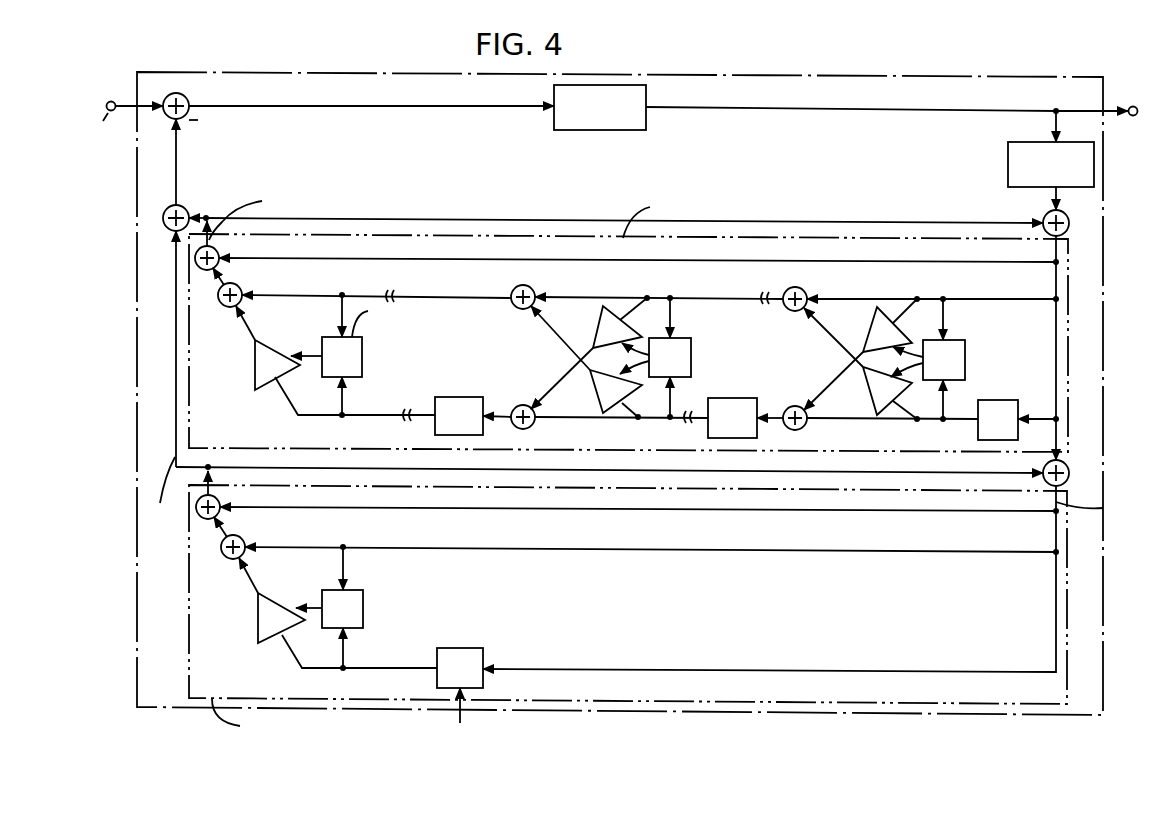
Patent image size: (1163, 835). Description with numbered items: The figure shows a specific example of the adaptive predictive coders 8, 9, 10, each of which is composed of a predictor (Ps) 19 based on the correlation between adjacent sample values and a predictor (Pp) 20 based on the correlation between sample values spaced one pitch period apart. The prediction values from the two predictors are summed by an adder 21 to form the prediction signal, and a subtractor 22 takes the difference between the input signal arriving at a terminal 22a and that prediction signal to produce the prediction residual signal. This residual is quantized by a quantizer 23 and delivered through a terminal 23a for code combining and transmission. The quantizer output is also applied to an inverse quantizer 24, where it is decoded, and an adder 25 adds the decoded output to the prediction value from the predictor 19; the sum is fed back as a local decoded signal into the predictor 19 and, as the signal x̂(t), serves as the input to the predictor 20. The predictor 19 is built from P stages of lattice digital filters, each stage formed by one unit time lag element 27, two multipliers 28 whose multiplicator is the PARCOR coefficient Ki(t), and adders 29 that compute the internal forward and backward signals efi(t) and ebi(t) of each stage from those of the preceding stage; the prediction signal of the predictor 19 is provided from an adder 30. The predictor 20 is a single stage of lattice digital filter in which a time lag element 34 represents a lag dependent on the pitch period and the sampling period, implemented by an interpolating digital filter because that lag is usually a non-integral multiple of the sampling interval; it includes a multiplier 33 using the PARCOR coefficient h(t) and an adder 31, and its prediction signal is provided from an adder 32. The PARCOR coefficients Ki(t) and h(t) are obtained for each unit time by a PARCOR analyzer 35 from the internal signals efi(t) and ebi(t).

The adaptive predictive coder 8 is at (620, 380).
The adaptive predictive coder 9 is at (620, 380).
The adaptive predictive coder 10 is at (963, 77).
The predictor (Ps) 19 is at (908, 238).
The predictor (Pp) 20 is at (187, 593).
The adder 21 is at (187, 208).
The subtractor 22 is at (186, 98).
The terminal 22a is at (111, 101).
The quantizer 23 is at (603, 131).
The terminal 23a is at (1136, 107).
The inverse quantizer 24 is at (1008, 155).
The adder 25 is at (1066, 214).
The unit time lag element 27 is at (478, 397).
The multiplier 28 is at (255, 373).
The adder 29 is at (240, 286).
The adder 30 is at (195, 265).
The adder 31 is at (243, 540).
The adder 32 is at (203, 521).
The multiplier 33 is at (258, 622).
The time lag element 34 is at (478, 648).
The PARCOR analyzer 35 is at (328, 337).